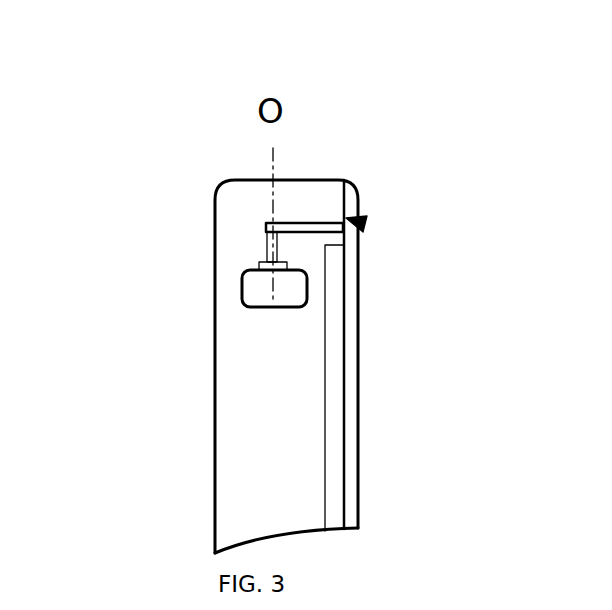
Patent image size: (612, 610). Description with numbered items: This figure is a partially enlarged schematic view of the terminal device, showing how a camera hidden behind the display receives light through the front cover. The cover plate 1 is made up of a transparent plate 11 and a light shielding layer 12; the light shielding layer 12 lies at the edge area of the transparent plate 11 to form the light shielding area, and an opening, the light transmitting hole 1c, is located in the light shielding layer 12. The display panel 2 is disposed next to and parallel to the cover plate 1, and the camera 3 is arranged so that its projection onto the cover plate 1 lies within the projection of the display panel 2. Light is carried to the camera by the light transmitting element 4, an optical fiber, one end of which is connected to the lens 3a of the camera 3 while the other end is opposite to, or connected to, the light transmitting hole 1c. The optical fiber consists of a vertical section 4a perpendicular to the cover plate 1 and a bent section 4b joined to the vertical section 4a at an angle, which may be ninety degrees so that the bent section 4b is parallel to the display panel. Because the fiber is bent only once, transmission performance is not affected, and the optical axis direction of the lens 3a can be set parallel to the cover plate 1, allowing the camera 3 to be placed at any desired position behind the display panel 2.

The cover plate 1 is at (422, 80).
The transparent plate 11 is at (353, 182).
The light shielding layer 12 is at (349, 203).
The light transmitting hole 1c is at (365, 224).
The display panel 2 is at (333, 400).
The camera 3 is at (262, 297).
The lens 3a is at (257, 273).
The light transmitting element 4 is at (118, 172).
The vertical section 4a is at (266, 225).
The bent section 4b is at (268, 245).